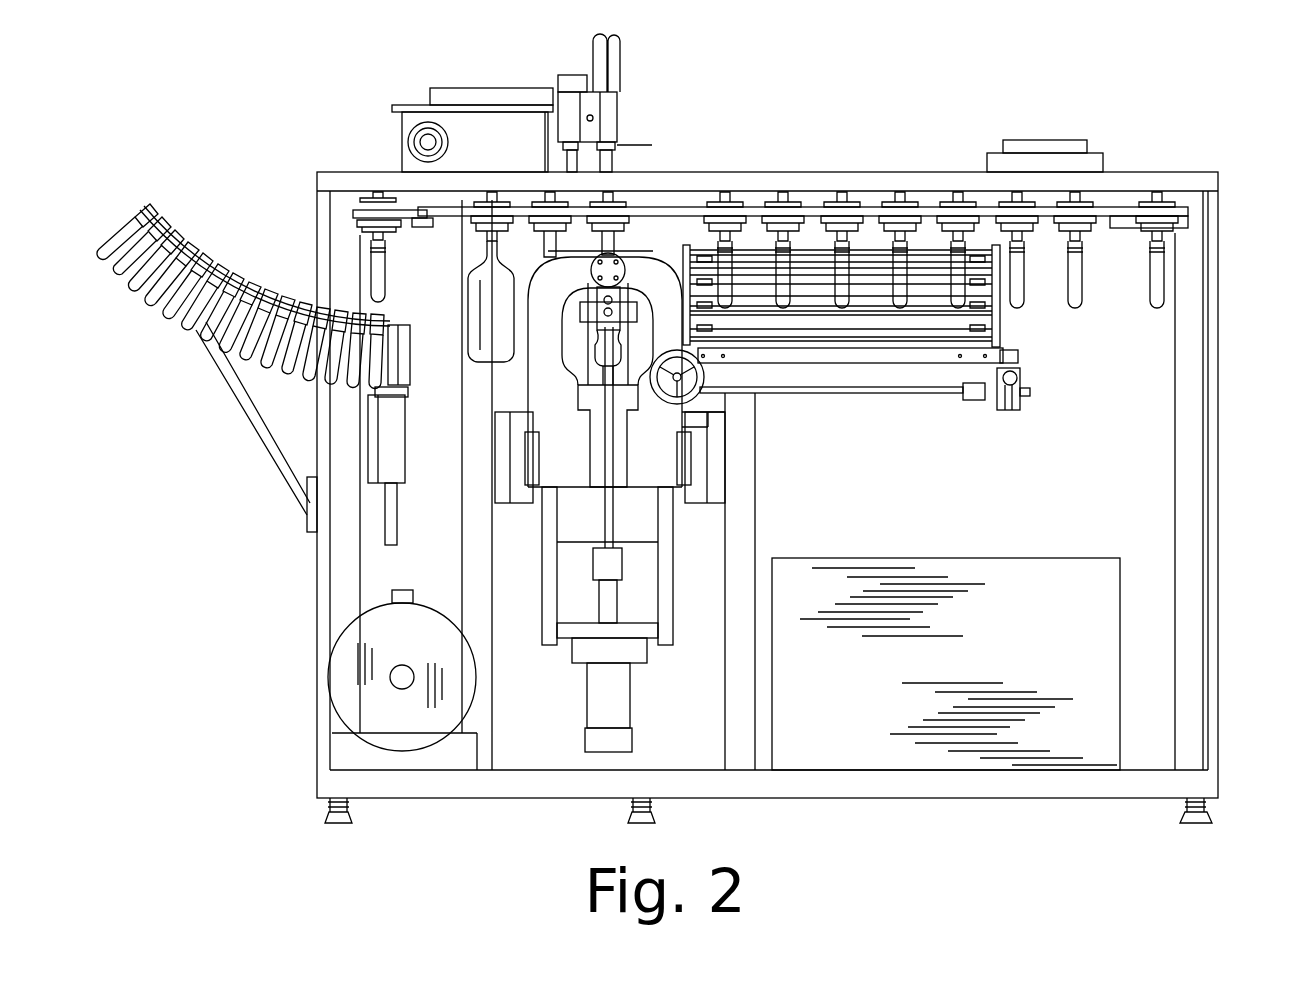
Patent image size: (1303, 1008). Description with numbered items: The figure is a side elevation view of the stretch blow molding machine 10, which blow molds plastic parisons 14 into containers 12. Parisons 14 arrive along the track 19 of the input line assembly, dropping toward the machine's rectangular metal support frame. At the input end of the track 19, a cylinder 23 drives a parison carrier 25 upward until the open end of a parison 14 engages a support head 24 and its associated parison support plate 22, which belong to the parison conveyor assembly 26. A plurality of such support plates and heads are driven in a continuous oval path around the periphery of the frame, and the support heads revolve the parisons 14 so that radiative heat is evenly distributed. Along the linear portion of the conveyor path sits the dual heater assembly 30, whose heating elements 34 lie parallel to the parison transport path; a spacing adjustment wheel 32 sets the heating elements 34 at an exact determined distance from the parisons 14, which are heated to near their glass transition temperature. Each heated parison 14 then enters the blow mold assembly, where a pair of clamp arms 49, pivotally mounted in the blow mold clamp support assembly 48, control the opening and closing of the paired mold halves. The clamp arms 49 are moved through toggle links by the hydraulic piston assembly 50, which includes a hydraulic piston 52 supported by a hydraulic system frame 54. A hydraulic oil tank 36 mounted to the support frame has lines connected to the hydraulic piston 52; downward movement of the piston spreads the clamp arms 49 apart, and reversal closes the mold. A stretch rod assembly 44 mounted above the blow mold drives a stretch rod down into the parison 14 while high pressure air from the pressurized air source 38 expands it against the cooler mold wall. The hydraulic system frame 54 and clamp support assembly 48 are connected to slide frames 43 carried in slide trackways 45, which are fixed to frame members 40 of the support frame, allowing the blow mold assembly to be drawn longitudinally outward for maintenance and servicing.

The stretch blow molding machine 10 is at (1147, 97).
The container 12 is at (482, 357).
The parison 14 is at (128, 237).
The track 19 is at (242, 275).
The parison support plate 22 is at (353, 217).
The cylinder 23 is at (392, 318).
The support head 24 is at (387, 237).
The parison carrier 25 is at (393, 425).
The parison conveyor assembly 26 is at (862, 166).
The dual heater assembly 30 is at (919, 418).
The spacing adjustment wheel 32 is at (668, 405).
The heating elements 34 is at (808, 315).
The hydraulic oil tank 36 is at (932, 674).
The pressurized air source 38 is at (390, 644).
The frame members 40 is at (573, 489).
The slide frames 43 is at (528, 458).
The stretch rod assembly 44 is at (657, 138).
The slide trackways 45 is at (522, 494).
The blow mold clamp support assembly 48 is at (662, 278).
The clamp arms 49 is at (590, 408).
The hydraulic piston assembly 50 is at (662, 666).
The hydraulic piston 52 is at (589, 648).
The hydraulic system frame 54 is at (550, 598).